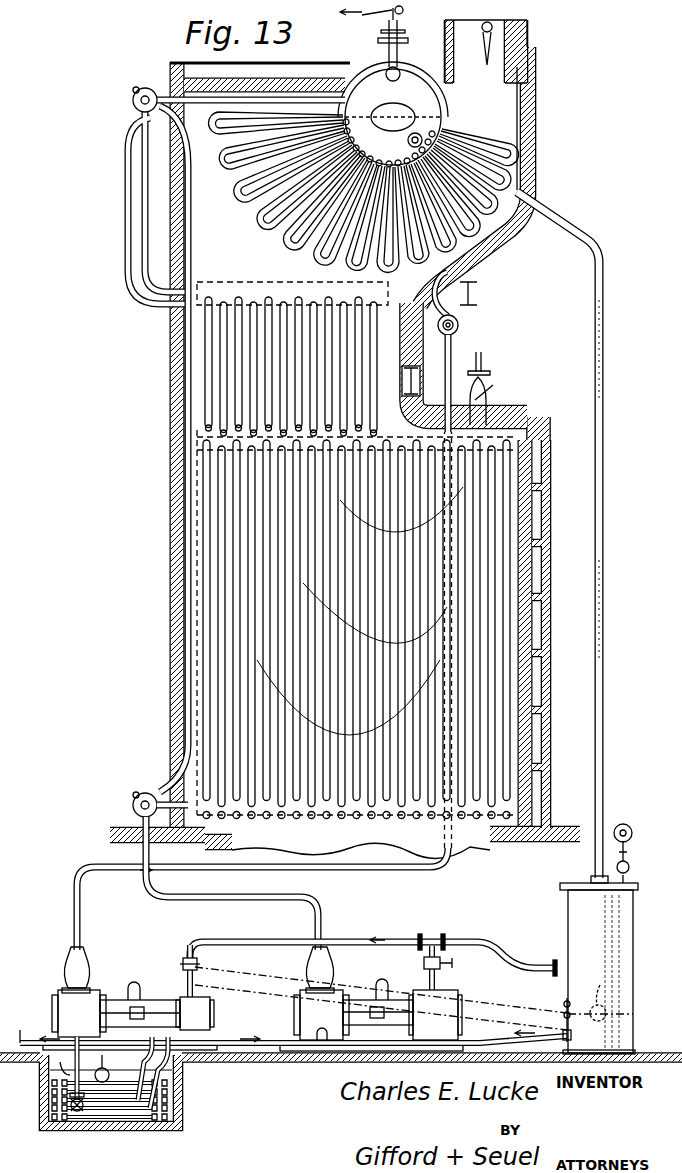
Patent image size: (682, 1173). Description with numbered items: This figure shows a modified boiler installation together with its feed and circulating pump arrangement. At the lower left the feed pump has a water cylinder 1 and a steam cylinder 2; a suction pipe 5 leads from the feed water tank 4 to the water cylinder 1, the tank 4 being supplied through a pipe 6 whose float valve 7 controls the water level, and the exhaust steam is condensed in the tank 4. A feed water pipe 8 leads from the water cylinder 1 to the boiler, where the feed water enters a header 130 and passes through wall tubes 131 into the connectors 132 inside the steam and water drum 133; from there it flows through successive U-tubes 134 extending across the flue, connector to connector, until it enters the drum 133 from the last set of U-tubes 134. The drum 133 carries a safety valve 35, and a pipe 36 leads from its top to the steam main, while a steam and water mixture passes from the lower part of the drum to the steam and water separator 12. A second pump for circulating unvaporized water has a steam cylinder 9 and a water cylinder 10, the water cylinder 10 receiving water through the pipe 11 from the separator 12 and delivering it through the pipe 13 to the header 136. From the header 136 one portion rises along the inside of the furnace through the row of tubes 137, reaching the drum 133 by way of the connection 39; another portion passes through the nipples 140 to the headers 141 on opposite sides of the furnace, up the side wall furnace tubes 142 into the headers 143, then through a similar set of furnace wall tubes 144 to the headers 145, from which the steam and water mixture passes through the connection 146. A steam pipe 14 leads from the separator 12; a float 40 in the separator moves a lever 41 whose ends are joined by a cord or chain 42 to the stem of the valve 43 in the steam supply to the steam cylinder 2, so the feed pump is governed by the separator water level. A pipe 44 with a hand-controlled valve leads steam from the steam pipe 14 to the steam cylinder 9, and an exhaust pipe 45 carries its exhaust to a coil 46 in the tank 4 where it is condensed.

The water cylinder 1 is at (58, 1005).
The steam cylinder 2 is at (200, 1017).
The feed water tank 4 is at (65, 1125).
The suction pipe 5 is at (68, 1100).
The pipe 6 is at (18, 1035).
The float valve 7 is at (105, 1078).
The feed water pipe 8 is at (453, 353).
The steam cylinder 9 is at (440, 1012).
The water cylinder 10 is at (300, 1016).
The pipe 11 is at (525, 1043).
The steam and water separator 12 is at (628, 955).
The pipe 13 is at (323, 920).
The steam pipe 14 is at (283, 942).
The safety valve 35 is at (388, 36).
The pipe 36 is at (396, 12).
The connection 39 is at (487, 396).
The float 40 is at (593, 1000).
The lever 41 is at (565, 1013).
The cord or chain 42 is at (470, 1002).
The valve 43 is at (198, 965).
The pipe 44 is at (445, 970).
The exhaust pipe 45 is at (262, 1052).
The coil 46 is at (170, 1100).
The header 130 is at (460, 326).
The wall tubes 131 is at (535, 163).
The connectors 132 is at (431, 98).
The steam and water drum 133 is at (406, 77).
The U-tubes 134 is at (515, 115).
The header 136 is at (133, 101).
The row of tubes 137 is at (187, 605).
The nipples 140 is at (145, 817).
The headers 141 is at (412, 818).
The side wall furnace tubes 142 is at (216, 532).
The headers 143 is at (197, 437).
The furnace wall tubes 144 is at (205, 388).
The headers 145 is at (250, 282).
The connection 146 is at (133, 175).